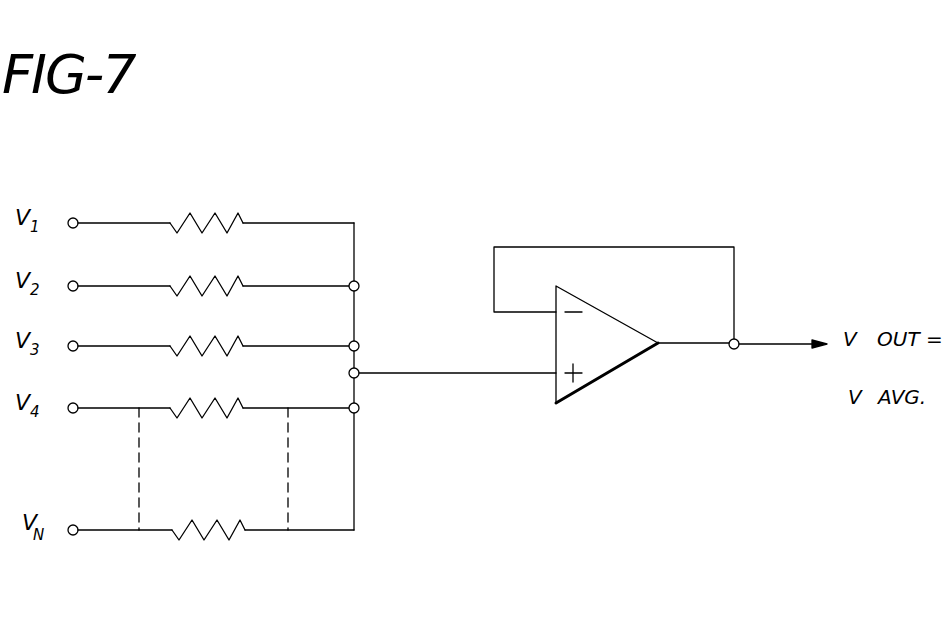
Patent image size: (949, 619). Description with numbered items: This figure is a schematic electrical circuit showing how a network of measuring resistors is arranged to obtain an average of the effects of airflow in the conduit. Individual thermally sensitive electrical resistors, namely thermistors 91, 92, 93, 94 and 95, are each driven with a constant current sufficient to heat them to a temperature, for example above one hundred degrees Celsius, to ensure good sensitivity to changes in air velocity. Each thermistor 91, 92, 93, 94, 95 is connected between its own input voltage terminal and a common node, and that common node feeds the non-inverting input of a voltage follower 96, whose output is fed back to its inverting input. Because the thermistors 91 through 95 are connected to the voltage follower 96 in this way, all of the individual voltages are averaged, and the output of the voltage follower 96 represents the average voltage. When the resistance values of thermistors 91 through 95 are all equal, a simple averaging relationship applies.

The thermistor 91 is at (241, 221).
The thermistor 92 is at (241, 284).
The thermistor 93 is at (241, 344).
The thermistor 94 is at (241, 406).
The thermistor 95 is at (237, 528).
The voltage follower 96 is at (603, 380).